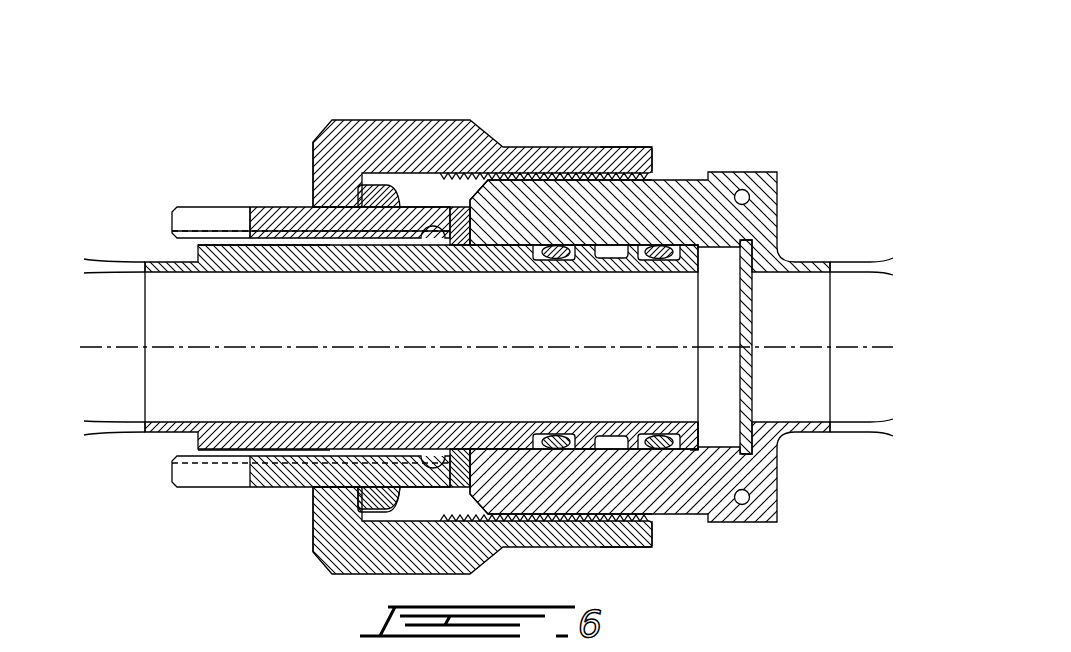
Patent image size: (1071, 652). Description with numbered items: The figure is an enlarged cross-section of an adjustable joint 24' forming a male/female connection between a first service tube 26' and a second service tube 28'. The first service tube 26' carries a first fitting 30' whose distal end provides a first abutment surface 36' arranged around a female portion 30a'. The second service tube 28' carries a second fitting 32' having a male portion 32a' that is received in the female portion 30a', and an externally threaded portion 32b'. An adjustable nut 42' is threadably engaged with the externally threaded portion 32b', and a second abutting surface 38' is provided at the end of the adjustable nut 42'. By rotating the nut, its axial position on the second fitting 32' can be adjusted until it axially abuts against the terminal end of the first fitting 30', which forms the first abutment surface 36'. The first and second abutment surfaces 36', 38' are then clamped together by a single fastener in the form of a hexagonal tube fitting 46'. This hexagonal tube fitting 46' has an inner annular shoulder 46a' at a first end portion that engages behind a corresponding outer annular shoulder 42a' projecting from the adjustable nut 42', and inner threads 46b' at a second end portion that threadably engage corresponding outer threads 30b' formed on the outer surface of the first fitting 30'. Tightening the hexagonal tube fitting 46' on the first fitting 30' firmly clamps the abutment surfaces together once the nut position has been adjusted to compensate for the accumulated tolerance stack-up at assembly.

The adjustable joint 24' is at (493, 290).
The first service tube 26' is at (868, 313).
The second service tube 28' is at (112, 388).
The first fitting 30' is at (646, 292).
The female portion 30a' is at (766, 347).
The outer threads 30b' is at (606, 303).
The second fitting 32' is at (475, 402).
The male portion 32a' is at (753, 414).
The externally threaded portion 32b' is at (268, 343).
The first abutment surface 36' is at (555, 288).
The second abutting surface 38' is at (426, 347).
The adjustable nut 42' is at (311, 316).
The outer annular shoulder 42a' is at (376, 445).
The hexagonal tube fitting 46' is at (477, 305).
The inner annular shoulder 46a' is at (313, 312).
The inner threads 46b' is at (644, 309).